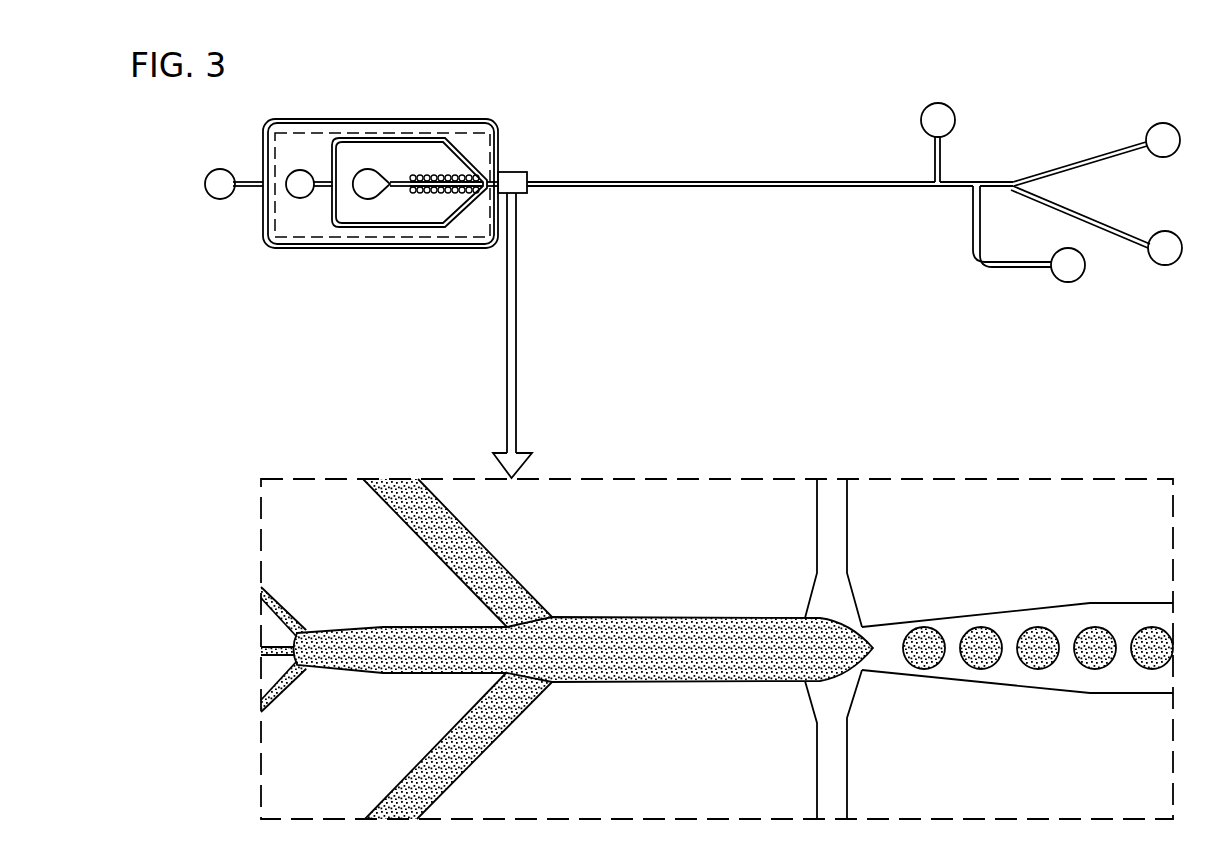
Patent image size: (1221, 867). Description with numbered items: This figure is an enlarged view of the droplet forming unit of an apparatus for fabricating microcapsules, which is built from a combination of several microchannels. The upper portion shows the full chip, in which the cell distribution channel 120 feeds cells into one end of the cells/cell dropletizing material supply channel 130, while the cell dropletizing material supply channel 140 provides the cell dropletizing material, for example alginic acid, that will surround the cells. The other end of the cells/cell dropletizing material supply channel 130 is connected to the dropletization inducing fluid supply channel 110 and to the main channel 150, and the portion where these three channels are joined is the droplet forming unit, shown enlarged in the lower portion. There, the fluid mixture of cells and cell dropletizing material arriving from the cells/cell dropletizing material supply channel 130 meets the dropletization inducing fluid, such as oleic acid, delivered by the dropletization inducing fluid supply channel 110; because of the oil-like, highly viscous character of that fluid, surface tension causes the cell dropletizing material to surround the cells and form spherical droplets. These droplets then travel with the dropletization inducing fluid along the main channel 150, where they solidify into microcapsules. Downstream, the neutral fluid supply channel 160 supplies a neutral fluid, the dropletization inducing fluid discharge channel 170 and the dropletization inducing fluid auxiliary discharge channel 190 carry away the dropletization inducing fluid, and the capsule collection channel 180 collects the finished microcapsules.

The dropletization inducing fluid supply channel 110 is at (288, 118).
The cell distribution channel 120 is at (452, 170).
The cells/cell dropletizing material supply channel 130 is at (500, 204).
The cell dropletizing material supply channel 140 is at (367, 228).
The main channel 150 is at (667, 181).
The neutral fluid supply channel 160 is at (935, 158).
The dropletization inducing fluid discharge channel 170 is at (1007, 268).
The capsule collection channel 180 is at (1090, 153).
The dropletization inducing fluid auxiliary discharge channel 190 is at (1117, 223).